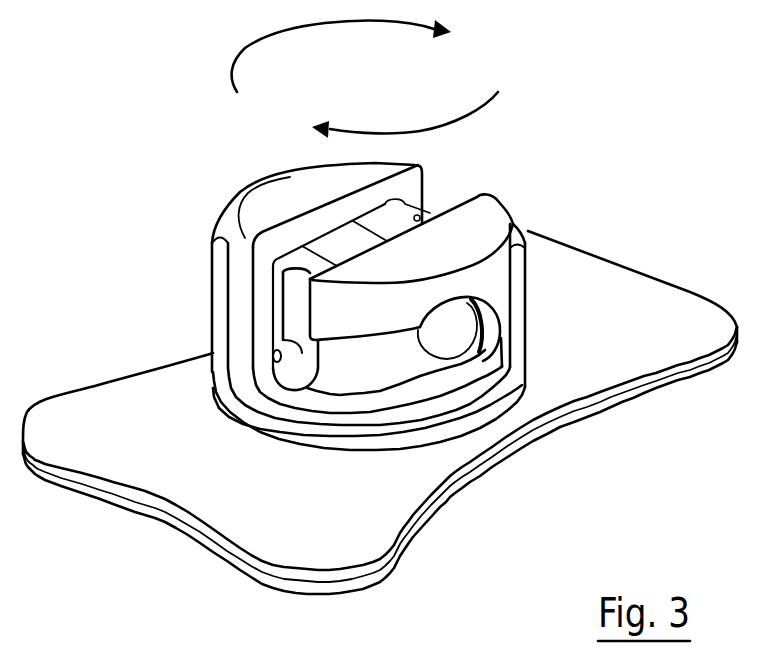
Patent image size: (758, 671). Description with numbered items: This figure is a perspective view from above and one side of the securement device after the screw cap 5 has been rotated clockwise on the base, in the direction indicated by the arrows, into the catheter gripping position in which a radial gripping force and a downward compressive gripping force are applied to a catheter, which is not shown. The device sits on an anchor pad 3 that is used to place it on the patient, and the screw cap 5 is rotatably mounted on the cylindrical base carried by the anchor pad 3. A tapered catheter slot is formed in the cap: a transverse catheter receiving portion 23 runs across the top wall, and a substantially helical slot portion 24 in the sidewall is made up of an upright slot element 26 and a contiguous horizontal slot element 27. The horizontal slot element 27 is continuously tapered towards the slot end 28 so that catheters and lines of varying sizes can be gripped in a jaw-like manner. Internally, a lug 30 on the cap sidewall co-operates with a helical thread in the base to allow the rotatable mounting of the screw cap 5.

The anchor pad 3 is at (146, 464).
The screw cap 5 is at (274, 193).
The transverse catheter receiving portion 23 is at (452, 180).
The first helical slot portion 24 is at (502, 326).
The upright slot element 26 is at (265, 290).
The horizontal slot element 27 is at (445, 378).
The slot end 28 is at (485, 348).
The lug 30 is at (268, 357).